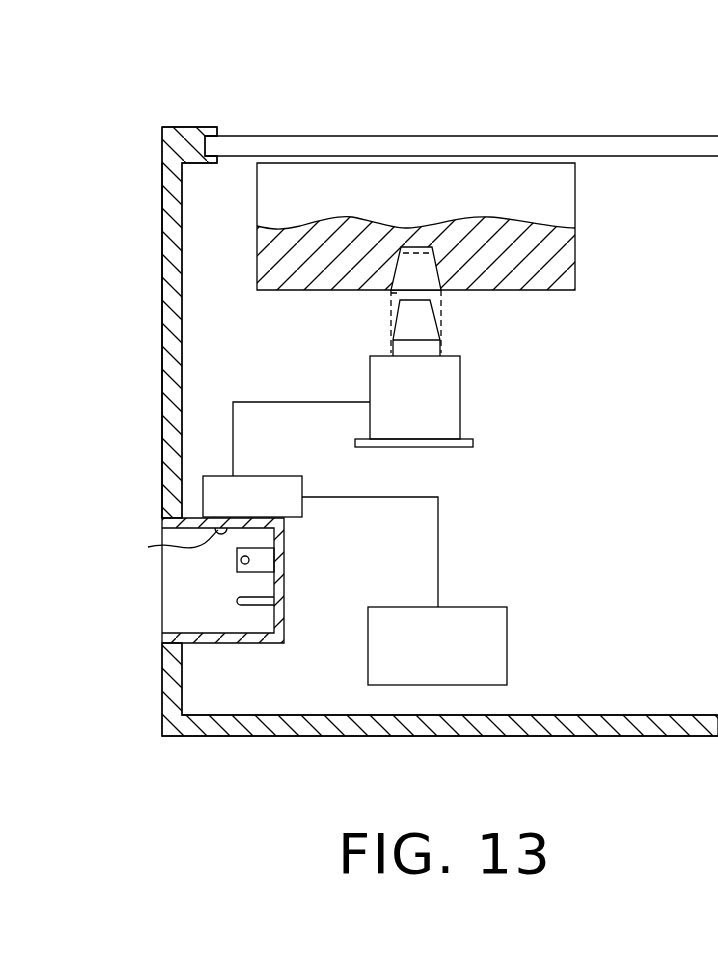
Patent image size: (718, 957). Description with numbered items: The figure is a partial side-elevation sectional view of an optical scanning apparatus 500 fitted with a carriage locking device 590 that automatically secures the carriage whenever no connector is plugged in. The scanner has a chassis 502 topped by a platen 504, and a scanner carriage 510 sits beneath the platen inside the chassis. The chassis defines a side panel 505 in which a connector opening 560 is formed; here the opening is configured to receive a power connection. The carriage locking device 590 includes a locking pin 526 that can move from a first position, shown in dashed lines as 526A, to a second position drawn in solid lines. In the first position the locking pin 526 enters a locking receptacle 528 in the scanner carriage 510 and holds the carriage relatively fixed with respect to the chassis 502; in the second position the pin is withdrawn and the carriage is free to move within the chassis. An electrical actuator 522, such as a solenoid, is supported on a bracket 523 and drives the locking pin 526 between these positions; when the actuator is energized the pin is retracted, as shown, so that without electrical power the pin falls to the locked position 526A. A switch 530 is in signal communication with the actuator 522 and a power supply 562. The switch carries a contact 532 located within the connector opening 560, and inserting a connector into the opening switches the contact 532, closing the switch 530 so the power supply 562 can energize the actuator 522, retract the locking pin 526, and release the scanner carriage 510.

The optical scanning apparatus 500 is at (561, 94).
The chassis 502 is at (172, 282).
The platen 504 is at (428, 145).
The side panel 505 is at (163, 338).
The scanner carriage 510 is at (567, 195).
The electrical actuator 522 is at (452, 407).
The bracket 523 is at (466, 444).
The locking pin 526 is at (428, 331).
The first position of locking pin 526A is at (388, 295).
The locking receptacle 528 is at (412, 247).
The switch 530 is at (270, 485).
The contact 532 is at (159, 544).
The connector opening 560 is at (185, 595).
The power supply 562 is at (500, 649).
The carriage locking device 590 is at (577, 398).